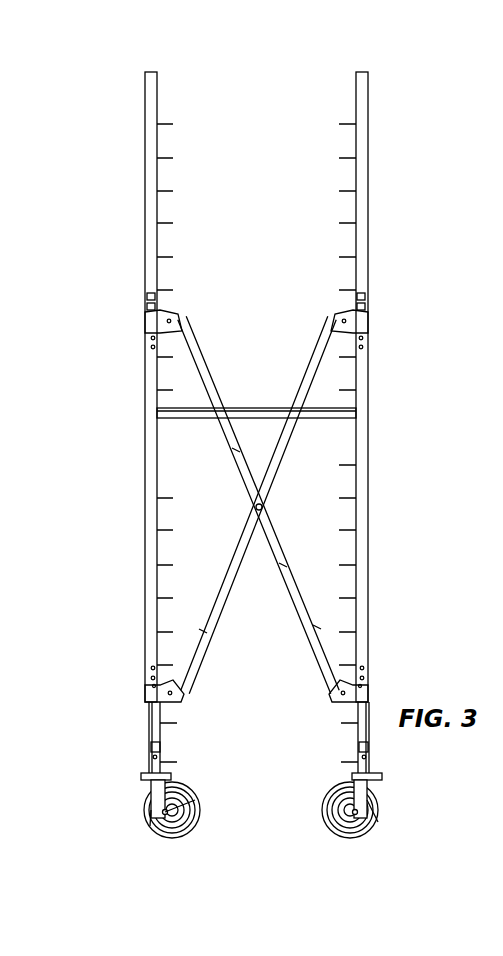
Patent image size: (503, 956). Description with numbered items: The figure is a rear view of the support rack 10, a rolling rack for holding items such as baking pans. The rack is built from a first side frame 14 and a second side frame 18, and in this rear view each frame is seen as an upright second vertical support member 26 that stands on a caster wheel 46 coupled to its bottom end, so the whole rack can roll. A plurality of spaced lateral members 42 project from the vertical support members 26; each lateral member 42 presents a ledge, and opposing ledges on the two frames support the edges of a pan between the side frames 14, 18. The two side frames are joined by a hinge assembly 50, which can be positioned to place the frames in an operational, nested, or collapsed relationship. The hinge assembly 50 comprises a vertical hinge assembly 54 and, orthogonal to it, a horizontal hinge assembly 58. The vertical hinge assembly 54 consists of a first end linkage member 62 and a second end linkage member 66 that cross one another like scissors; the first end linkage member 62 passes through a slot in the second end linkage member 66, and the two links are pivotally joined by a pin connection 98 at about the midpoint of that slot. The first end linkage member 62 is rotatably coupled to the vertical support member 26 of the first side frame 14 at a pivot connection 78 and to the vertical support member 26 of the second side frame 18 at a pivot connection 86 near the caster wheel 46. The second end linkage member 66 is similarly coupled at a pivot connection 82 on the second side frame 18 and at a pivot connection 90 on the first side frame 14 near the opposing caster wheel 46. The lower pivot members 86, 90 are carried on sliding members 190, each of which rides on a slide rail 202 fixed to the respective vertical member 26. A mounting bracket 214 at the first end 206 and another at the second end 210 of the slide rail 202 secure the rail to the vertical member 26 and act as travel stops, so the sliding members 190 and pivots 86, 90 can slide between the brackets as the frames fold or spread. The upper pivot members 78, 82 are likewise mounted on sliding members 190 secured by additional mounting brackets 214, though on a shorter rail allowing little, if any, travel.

The support rack 10 is at (432, 135).
The first side frame 14 is at (456, 240).
The second side frame 18 is at (66, 248).
The second vertical support member 26 is at (150, 222).
The lateral member 42 is at (231, 172).
The caster wheel 46 is at (200, 802).
The hinge assembly 50 is at (406, 446).
The vertical hinge assembly 54 is at (263, 566).
The horizontal hinge assembly 58 is at (265, 402).
The first end linkage member 62 is at (205, 637).
The second end linkage member 66 is at (315, 638).
The pivot connection 78 is at (370, 331).
The pivot connection 82 is at (146, 340).
The pivot connection 86 is at (148, 698).
The pivot connection 90 is at (370, 676).
The pin connection 98 is at (264, 505).
The sliding member 190 is at (148, 320).
The slide rail 202 is at (163, 726).
The first end 206 is at (150, 750).
The second end 210 is at (150, 684).
The mounting bracket 214 is at (145, 299).